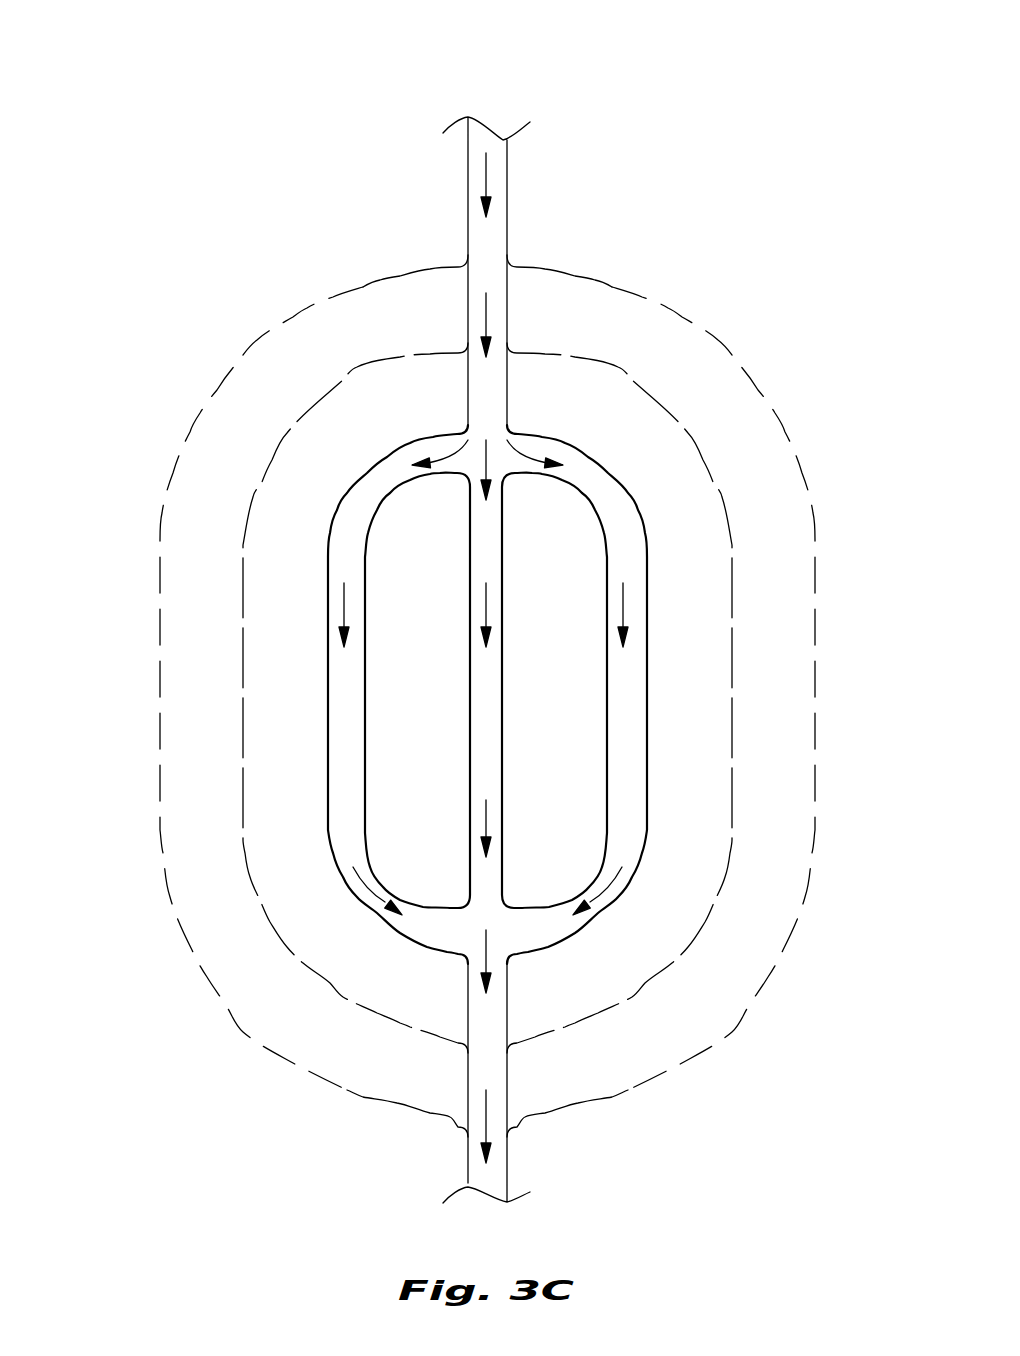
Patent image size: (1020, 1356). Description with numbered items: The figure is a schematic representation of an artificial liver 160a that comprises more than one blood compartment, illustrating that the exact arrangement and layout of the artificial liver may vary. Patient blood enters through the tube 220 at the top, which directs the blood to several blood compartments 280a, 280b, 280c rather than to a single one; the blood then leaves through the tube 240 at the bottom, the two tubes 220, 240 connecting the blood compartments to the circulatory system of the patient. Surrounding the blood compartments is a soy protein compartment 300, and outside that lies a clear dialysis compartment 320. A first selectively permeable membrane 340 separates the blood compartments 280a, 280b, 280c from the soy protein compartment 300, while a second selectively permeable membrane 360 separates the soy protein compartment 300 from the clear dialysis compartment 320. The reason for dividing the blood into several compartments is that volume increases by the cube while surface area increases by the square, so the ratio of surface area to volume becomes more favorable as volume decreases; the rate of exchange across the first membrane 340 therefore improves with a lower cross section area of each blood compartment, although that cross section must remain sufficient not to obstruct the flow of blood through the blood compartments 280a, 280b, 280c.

The artificial liver 160a is at (118, 85).
The tube 220 is at (446, 271).
The tube 240 is at (533, 1066).
The blood compartment 280a is at (627, 425).
The blood compartment 280b is at (701, 648).
The blood compartment 280c is at (330, 854).
The soy protein compartment 300 is at (583, 667).
The clear dialysis compartment 320 is at (540, 669).
The first selectively permeable membrane 340 is at (491, 782).
The second selectively permeable membrane 360 is at (479, 661).